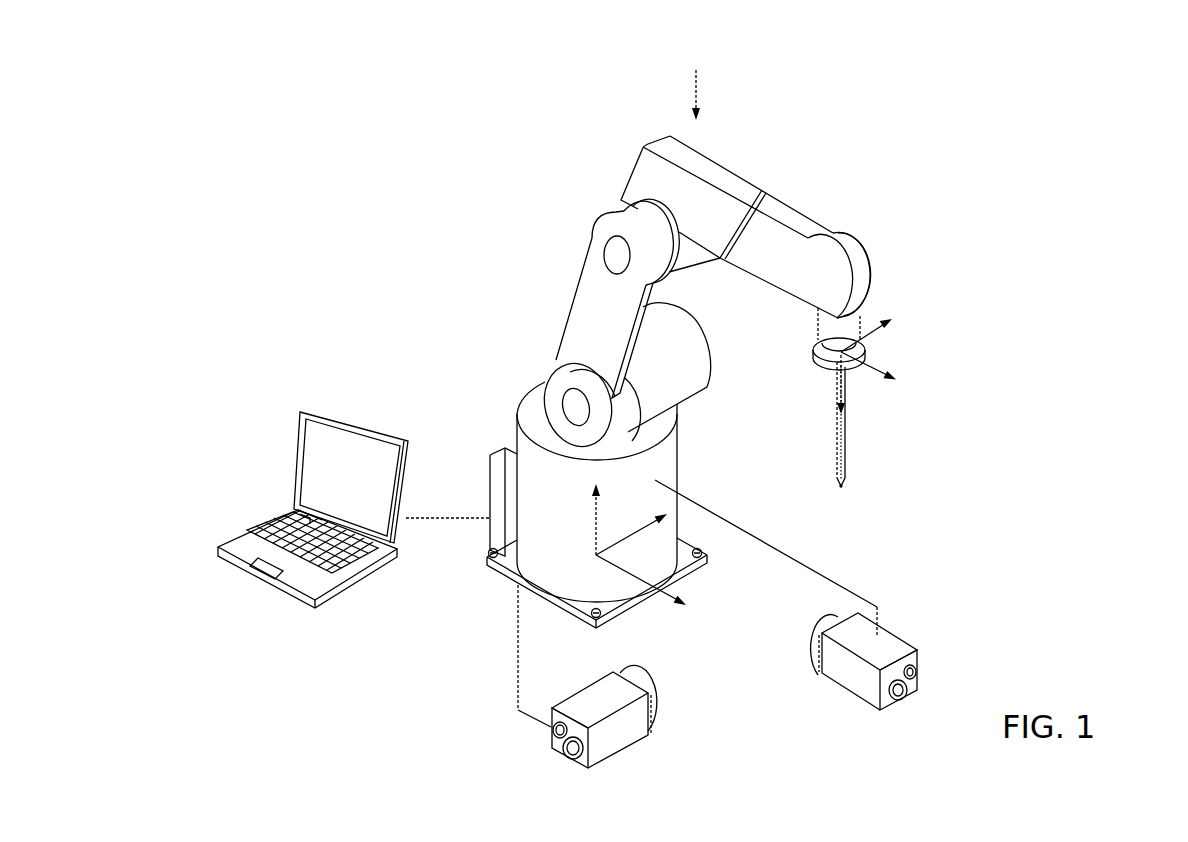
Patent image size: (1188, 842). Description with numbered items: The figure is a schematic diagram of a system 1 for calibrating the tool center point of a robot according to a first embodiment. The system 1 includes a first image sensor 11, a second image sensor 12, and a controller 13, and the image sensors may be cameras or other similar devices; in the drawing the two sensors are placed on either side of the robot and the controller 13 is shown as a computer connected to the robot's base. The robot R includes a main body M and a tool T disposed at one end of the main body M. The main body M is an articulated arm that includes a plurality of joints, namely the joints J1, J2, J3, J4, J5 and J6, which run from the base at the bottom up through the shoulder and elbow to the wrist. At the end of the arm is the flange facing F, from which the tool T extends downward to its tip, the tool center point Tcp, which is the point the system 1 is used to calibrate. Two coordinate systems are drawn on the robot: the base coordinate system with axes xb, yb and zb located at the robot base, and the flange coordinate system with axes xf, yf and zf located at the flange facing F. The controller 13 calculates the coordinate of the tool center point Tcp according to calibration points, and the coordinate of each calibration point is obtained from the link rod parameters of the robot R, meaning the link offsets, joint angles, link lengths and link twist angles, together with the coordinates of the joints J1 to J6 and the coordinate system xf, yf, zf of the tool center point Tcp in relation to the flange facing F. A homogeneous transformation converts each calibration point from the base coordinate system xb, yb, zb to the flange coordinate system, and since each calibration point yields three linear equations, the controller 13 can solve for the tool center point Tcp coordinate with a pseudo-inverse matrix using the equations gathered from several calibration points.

The system for calibrating tool center point of robot 1 is at (290, 111).
The first image sensor 11 is at (595, 690).
The second image sensor 12 is at (850, 678).
The controller 13 is at (315, 445).
The joint J1 is at (548, 512).
The joint J2 is at (575, 407).
The joint J3 is at (612, 258).
The joint J4 is at (755, 190).
The joint J5 is at (843, 258).
The joint J6 is at (825, 345).
The main body M is at (640, 175).
The flange facing F is at (826, 362).
The tool T is at (847, 459).
The tool center point Tcp is at (841, 486).
The robot R is at (693, 83).
The x axis of base coordinate system xb is at (657, 587).
The y axis of base coordinate system yb is at (631, 534).
The z axis of base coordinate system zb is at (607, 518).
The x axis of flange coordinate system xf is at (879, 371).
The y axis of flange coordinate system yf is at (877, 329).
The z axis of flange coordinate system zf is at (853, 388).